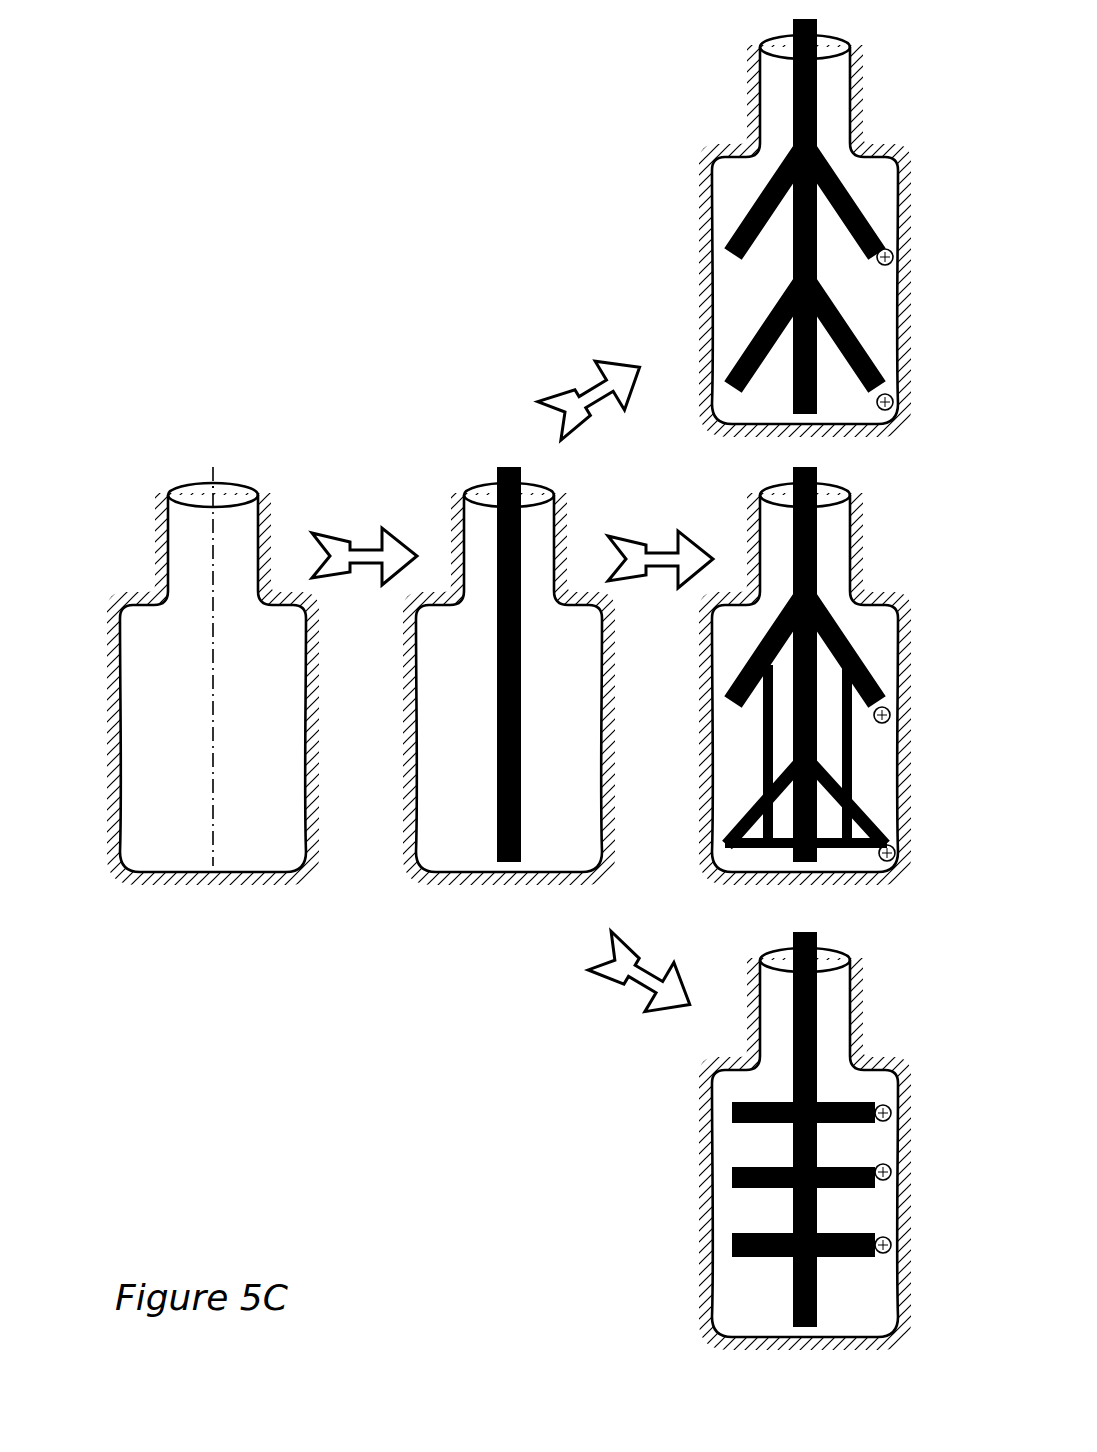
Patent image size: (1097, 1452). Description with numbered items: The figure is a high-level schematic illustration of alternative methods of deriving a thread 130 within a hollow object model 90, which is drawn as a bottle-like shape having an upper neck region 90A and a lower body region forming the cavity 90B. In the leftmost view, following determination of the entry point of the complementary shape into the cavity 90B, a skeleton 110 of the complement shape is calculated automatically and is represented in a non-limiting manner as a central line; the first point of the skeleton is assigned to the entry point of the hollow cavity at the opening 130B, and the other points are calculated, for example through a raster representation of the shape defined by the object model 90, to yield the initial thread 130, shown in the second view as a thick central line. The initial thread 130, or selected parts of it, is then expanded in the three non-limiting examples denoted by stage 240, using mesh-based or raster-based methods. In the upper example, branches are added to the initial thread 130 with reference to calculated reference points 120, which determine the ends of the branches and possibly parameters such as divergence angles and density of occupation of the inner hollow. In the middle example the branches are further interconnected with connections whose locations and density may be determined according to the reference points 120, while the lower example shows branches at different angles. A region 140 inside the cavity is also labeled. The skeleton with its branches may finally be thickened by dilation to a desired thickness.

The hollow object model 90 is at (181, 684).
The neck portion of mold 90A is at (167, 543).
The cavity 90B is at (176, 592).
The skeleton 110 is at (213, 720).
The reference point 120 is at (893, 256).
The thread 130 is at (497, 720).
The opening 130B is at (222, 489).
The cavity material 140 is at (743, 288).
The stage 240 is at (658, 548).